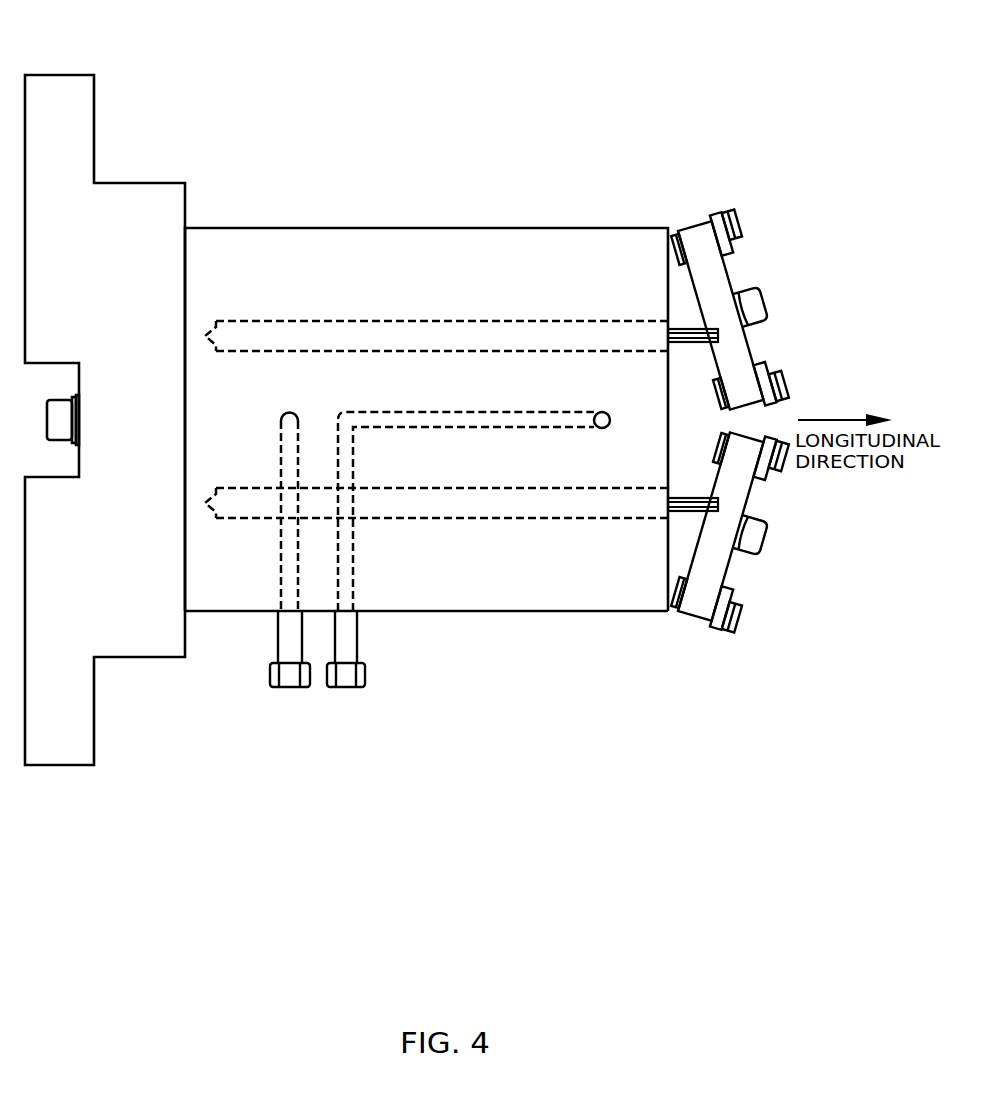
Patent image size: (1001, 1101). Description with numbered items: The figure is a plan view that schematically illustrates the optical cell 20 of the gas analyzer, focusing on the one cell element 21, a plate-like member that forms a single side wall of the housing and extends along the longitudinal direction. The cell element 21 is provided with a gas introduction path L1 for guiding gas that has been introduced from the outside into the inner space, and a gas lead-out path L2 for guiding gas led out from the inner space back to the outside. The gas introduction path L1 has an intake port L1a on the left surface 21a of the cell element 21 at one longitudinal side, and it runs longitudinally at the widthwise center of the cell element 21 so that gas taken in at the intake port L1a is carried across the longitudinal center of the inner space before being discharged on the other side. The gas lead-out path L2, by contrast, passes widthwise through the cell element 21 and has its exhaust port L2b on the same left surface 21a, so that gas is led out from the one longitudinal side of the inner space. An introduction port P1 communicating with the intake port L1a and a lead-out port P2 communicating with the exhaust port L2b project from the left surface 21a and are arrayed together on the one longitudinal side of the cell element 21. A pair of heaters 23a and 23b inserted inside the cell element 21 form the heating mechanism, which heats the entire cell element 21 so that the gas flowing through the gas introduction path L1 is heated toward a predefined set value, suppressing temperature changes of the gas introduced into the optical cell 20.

The optical cell 20 is at (643, 106).
The cell element 21 is at (427, 227).
The left surface 21a is at (444, 618).
The heater 23a is at (503, 320).
The heater 23b is at (490, 522).
The gas introduction path L1 is at (390, 410).
The intake port L1a is at (348, 608).
The gas lead-out path L2 is at (294, 412).
The exhaust port L2b is at (290, 608).
The introduction port P1 is at (352, 690).
The lead-out port P2 is at (292, 690).